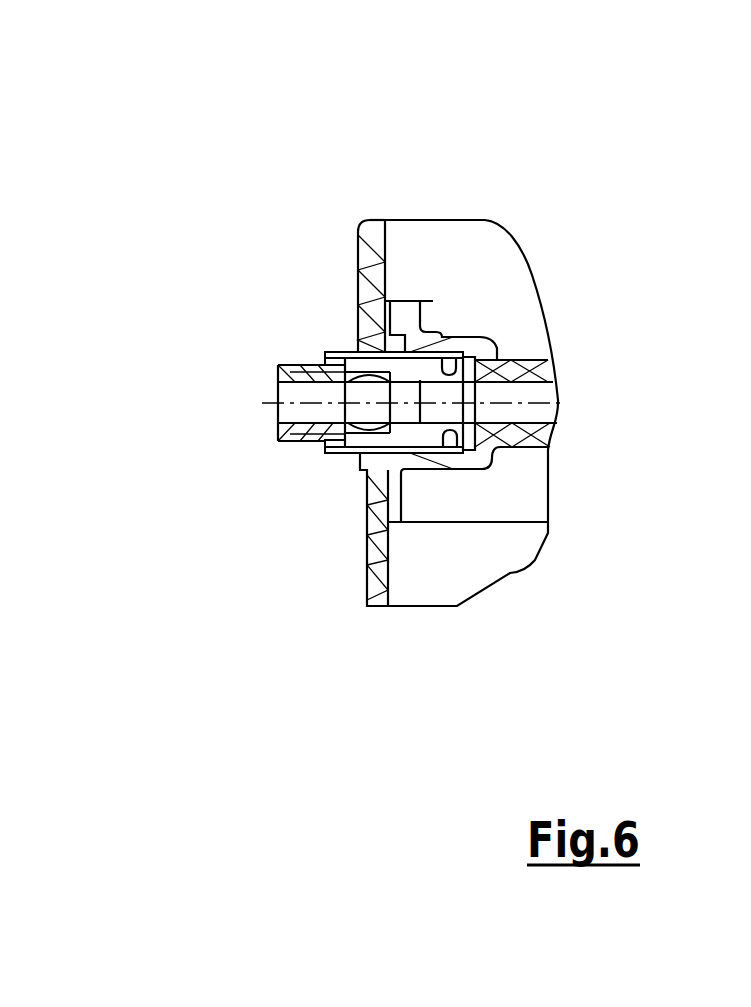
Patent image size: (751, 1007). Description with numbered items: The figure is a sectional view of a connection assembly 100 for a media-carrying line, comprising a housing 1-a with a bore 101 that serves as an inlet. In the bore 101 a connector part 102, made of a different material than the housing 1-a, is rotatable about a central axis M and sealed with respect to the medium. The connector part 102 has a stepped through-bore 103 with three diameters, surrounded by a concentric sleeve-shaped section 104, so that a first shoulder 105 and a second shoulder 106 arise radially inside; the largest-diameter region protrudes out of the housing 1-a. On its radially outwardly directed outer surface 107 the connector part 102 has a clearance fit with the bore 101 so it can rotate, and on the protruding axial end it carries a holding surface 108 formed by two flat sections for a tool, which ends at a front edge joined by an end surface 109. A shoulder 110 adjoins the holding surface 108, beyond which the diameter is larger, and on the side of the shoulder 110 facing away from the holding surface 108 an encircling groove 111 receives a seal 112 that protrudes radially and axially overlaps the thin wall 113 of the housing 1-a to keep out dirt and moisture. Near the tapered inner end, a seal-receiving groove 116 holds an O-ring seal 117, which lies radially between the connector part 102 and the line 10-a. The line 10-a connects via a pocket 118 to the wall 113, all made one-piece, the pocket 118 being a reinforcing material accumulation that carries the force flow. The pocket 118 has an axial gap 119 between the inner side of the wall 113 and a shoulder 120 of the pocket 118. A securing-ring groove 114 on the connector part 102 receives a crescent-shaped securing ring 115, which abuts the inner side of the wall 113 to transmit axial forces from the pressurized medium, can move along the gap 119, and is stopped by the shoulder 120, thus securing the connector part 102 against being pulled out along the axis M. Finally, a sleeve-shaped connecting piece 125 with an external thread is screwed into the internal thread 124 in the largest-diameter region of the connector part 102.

The connection assembly 100 is at (204, 313).
The bore 101 is at (335, 453).
The connector part 102 is at (282, 477).
The through-bore 103 is at (566, 326).
The sleeve-shaped section 104 is at (476, 307).
The first shoulder 105 is at (462, 593).
The second shoulder 106 is at (513, 557).
The outer surface 107 is at (364, 568).
The holding surface 108 is at (228, 324).
The end surface 109 is at (228, 395).
The shoulder 110 is at (228, 290).
The groove 111 is at (272, 208).
The seal 112 is at (394, 450).
The wall 113 is at (412, 142).
The securing-ring groove 114 is at (285, 611).
The securing ring 115 is at (459, 217).
The seal-receiving groove 116 is at (505, 587).
The seal 117 is at (512, 435).
The pocket 118 is at (530, 221).
The axial gap 119 is at (500, 205).
The shoulder 120 is at (555, 209).
The thread 124 is at (251, 463).
The connecting piece 125 is at (203, 429).
The housing 1-a is at (351, 205).
The line 10-a is at (578, 373).
The central axis M is at (610, 443).